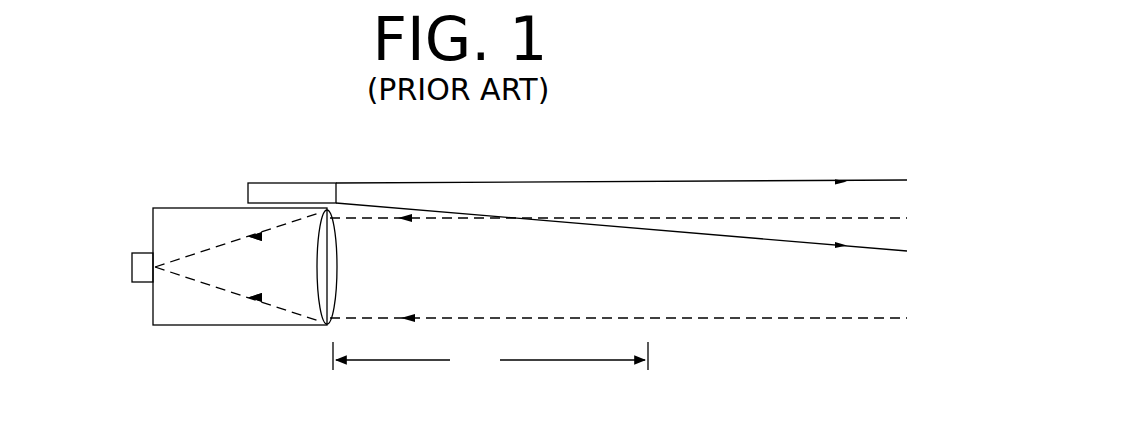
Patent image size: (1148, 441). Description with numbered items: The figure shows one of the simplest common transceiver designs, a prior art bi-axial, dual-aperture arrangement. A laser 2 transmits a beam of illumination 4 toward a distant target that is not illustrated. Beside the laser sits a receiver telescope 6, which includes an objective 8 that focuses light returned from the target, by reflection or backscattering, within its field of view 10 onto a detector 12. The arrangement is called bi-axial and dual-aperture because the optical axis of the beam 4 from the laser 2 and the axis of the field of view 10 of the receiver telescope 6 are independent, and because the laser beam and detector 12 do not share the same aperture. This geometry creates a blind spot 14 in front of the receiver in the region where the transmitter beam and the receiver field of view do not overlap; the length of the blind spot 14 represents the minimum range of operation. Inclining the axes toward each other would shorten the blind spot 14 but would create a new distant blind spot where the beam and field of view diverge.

The laser 2 is at (288, 190).
The beam of illumination 4 is at (812, 211).
The receiver telescope 6 is at (233, 346).
The objective 8 is at (328, 265).
The field of view 10 is at (600, 293).
The detector 12 is at (128, 236).
The blind spot 14 is at (490, 359).